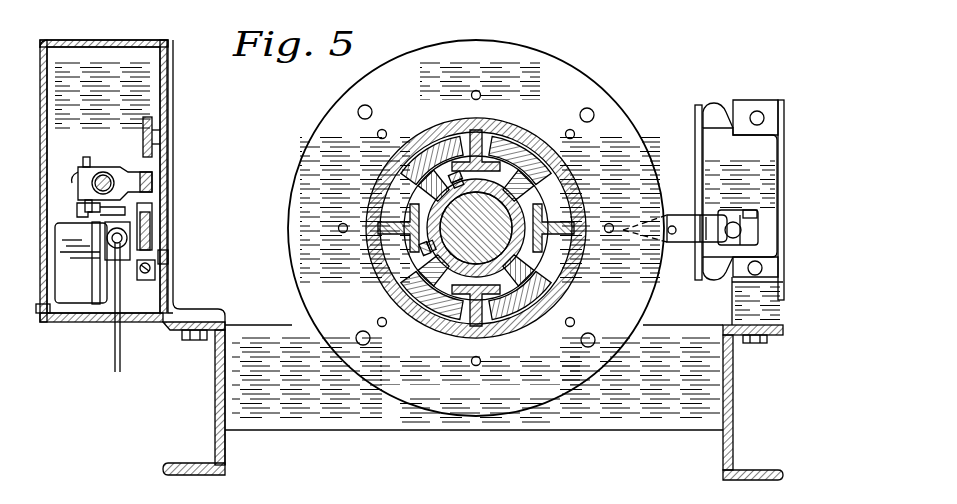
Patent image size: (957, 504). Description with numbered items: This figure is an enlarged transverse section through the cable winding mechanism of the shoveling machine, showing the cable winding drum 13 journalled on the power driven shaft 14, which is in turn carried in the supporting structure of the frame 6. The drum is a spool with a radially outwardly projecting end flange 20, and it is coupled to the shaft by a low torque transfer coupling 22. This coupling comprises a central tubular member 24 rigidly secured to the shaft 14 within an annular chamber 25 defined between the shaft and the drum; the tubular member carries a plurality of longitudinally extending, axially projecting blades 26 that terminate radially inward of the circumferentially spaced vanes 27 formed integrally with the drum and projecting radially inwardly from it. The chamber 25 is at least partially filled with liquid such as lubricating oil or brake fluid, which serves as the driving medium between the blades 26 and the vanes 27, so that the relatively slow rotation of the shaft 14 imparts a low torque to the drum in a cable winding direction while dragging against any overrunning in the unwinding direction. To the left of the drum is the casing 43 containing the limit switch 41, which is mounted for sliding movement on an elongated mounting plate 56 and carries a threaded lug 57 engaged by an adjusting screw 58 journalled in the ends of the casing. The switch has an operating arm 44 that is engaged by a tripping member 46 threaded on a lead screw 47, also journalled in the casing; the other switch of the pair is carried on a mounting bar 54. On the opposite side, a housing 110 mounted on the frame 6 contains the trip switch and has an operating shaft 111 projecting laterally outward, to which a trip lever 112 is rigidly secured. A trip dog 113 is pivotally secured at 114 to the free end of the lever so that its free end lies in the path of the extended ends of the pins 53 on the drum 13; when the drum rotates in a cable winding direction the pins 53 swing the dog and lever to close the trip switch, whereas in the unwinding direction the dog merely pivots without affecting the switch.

The frame 6 is at (258, 425).
The cable winding drum 13 is at (523, 123).
The power driven shaft 14 is at (500, 220).
The end flange 20 is at (530, 64).
The low torque transfer coupling 22 is at (432, 120).
The central tubular member 24 is at (425, 240).
The annular chamber 25 is at (442, 302).
The blades 26 is at (456, 132).
The vanes 27 is at (453, 310).
The limit switch 41 is at (76, 293).
The casing 43 is at (165, 118).
The operating arm 44 is at (95, 212).
The tripping member 46 is at (82, 178).
The lead screw 47 is at (120, 160).
The pins 53 is at (358, 112).
The mounting bar 54 is at (152, 137).
The elongated mounting plate 56 is at (152, 234).
The threaded lug 57 is at (150, 272).
The adjusting screw 58 is at (166, 259).
The housing 110 is at (722, 140).
The operating shaft 111 is at (733, 242).
The trip lever 112 is at (703, 236).
The trip dog 113 is at (643, 215).
The pivot 114 is at (680, 222).